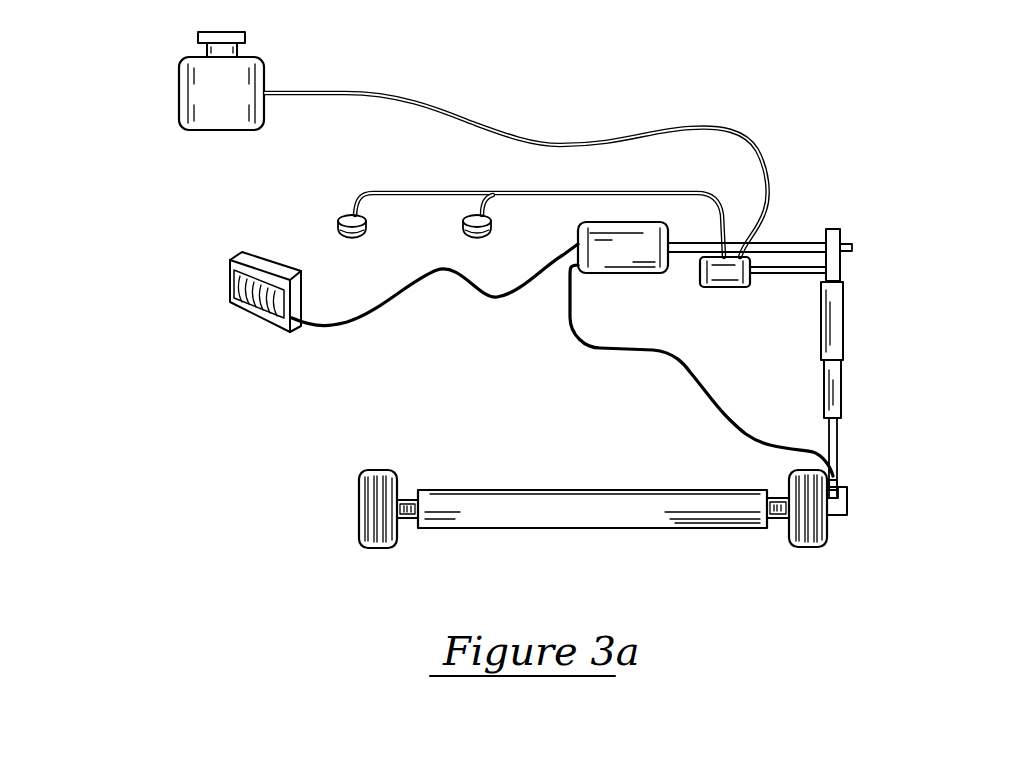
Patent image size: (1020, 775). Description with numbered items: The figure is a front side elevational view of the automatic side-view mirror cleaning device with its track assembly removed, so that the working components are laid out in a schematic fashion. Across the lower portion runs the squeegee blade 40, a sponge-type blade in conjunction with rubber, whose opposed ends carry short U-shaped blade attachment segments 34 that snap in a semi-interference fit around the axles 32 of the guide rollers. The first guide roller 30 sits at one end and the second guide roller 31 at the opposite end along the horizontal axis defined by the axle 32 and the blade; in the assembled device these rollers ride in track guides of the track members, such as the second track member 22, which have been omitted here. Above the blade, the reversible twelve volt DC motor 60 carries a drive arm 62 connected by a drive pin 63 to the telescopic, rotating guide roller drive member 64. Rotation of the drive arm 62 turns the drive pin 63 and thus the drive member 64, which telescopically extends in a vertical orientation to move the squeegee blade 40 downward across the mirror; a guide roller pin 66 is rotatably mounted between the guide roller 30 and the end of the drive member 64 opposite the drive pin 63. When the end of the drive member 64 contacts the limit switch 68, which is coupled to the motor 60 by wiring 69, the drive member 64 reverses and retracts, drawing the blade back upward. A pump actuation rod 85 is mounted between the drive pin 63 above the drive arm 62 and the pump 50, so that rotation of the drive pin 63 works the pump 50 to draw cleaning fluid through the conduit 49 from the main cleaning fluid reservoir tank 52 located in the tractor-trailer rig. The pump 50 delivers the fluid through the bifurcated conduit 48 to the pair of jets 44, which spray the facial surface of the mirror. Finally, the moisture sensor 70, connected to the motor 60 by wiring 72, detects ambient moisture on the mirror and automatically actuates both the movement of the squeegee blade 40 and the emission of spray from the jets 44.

The second track member 22 is at (404, 522).
The first guide roller 30 is at (810, 548).
The second guide roller 31 is at (375, 550).
The axle 32 is at (775, 495).
The U-shaped blade attachment segment 34 is at (410, 500).
The squeegee blade 40 is at (582, 530).
The jets 44 is at (354, 242).
The bifurcated conduit 48 is at (620, 192).
The conduit 49 is at (440, 115).
The pump 50 is at (727, 288).
The main cleaning fluid reservoir tank 52 is at (179, 86).
The reversible 12 volt DC motor 60 is at (622, 274).
The drive arm 62 is at (790, 243).
The drive pin 63 is at (840, 262).
The telescopic rotating guide roller drive member 64 is at (860, 283).
The guide roller pin 66 is at (842, 515).
The limit switch 68 is at (842, 486).
The wiring 69 is at (688, 368).
The moisture sensor 70 is at (230, 268).
The wiring 72 is at (418, 283).
The pump actuation rod 85 is at (790, 274).